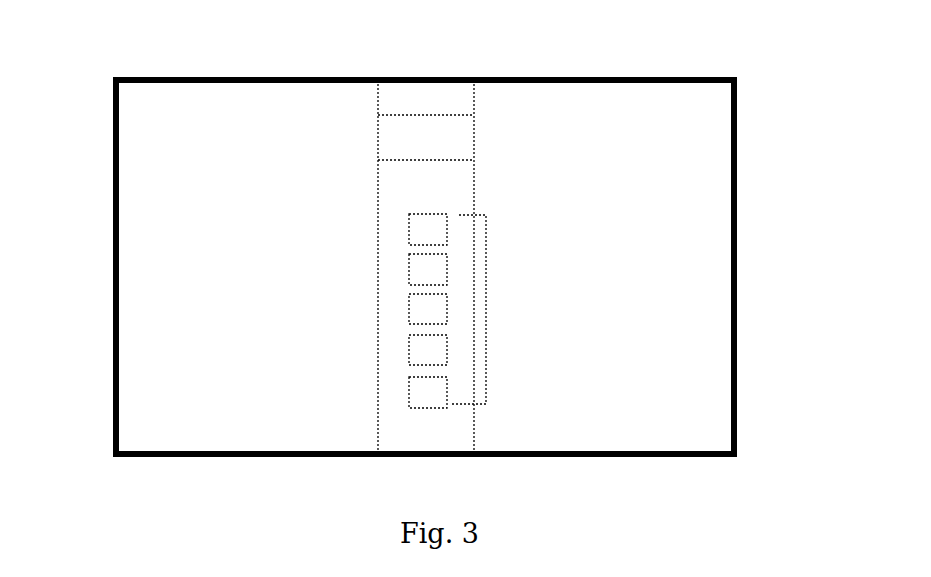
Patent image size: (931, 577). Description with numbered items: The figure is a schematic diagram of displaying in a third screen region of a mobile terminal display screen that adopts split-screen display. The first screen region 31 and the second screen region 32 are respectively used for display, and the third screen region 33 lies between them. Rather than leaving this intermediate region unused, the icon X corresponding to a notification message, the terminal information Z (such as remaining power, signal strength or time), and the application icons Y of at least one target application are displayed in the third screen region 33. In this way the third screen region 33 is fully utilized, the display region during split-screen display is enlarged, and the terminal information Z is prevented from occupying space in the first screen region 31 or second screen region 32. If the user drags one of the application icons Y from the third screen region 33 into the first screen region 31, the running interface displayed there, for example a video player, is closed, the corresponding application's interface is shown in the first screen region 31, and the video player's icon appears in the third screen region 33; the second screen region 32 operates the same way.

The first screen region 31 is at (183, 265).
The second screen region 32 is at (683, 213).
The third screen region 33 is at (424, 423).
The icon corresponding to the notification message X is at (413, 97).
The terminal information Z is at (445, 138).
The application icons Y is at (486, 293).